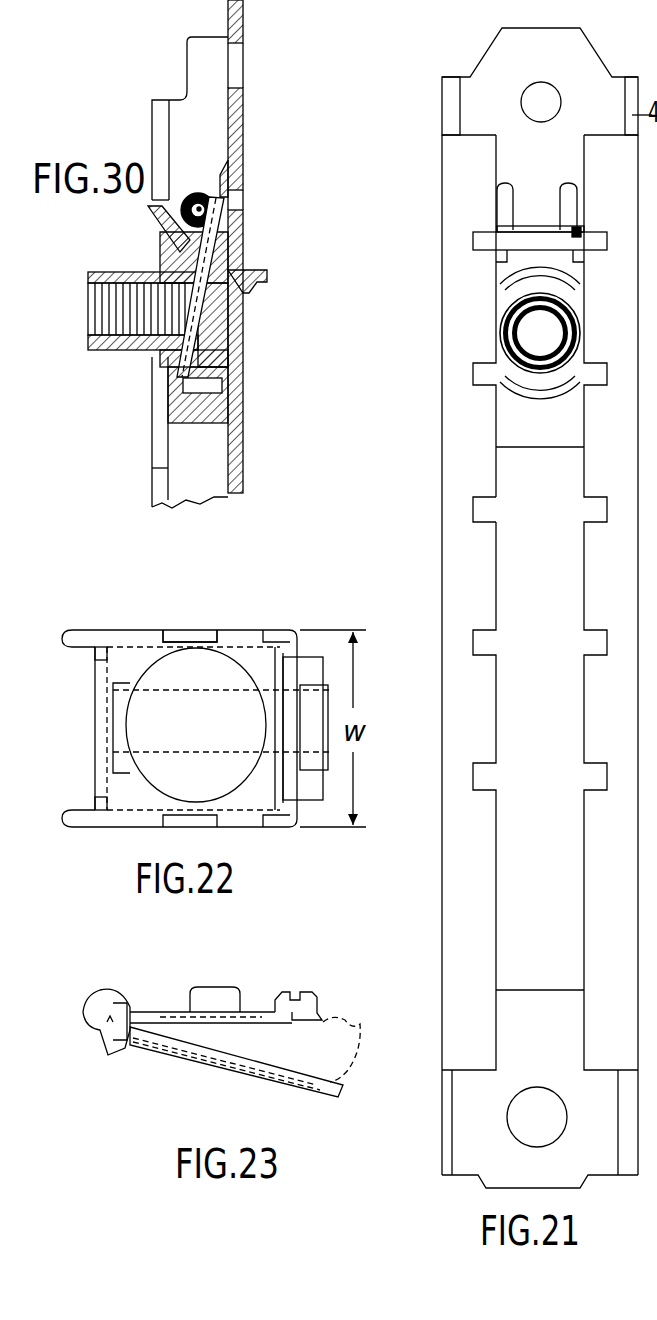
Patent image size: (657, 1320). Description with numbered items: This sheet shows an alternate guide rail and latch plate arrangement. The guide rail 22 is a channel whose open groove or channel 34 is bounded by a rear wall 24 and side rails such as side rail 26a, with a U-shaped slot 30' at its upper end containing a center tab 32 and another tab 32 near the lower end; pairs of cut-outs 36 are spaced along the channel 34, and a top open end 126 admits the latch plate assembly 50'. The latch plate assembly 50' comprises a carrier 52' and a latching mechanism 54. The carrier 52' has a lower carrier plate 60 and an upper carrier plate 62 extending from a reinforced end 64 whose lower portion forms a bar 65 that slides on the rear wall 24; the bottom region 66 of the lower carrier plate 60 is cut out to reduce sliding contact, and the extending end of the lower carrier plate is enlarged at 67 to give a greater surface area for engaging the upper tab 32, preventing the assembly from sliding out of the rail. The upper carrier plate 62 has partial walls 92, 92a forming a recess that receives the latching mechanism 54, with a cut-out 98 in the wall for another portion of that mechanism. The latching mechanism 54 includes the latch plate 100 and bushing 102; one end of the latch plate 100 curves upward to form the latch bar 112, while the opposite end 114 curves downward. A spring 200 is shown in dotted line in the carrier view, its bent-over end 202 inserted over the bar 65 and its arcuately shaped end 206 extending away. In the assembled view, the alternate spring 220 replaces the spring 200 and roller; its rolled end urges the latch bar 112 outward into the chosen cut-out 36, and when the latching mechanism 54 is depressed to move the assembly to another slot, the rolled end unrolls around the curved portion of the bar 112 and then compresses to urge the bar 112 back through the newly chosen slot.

In FIG. 30, the guide rail 22 is at (243, 27).
In FIG. 30, the rear wall 24 is at (236, 130).
In FIG. 21, the rear wall 24 is at (556, 36).
In FIG. 21, the side rail 26a is at (448, 113).
In FIG. 21, the U-shaped slot 30' is at (537, 193).
In FIG. 21, the tab 32 is at (541, 1006).
In FIG. 30, the channel 34 is at (215, 465).
In FIG. 21, the channel 34 is at (553, 605).
In FIG. 30, the cut-out 36 is at (157, 486).
In FIG. 21, the cut-out 36 is at (478, 505).
In FIG. 30, the latch plate assembly 50' is at (124, 329).
In FIG. 22, the carrier 52' is at (213, 702).
In FIG. 23, the carrier 52' is at (216, 984).
In FIG. 30, the latching mechanism 54 is at (128, 352).
In FIG. 23, the lower carrier plate 60 is at (235, 1070).
In FIG. 22, the upper carrier plate 62 is at (256, 782).
In FIG. 22, the reinforced end 64 is at (84, 655).
In FIG. 23, the reinforced end 64 is at (93, 998).
In FIG. 22, the bar 65 is at (100, 728).
In FIG. 23, the bar 65 is at (100, 1034).
In FIG. 22, the bottom region 66 is at (186, 690).
In FIG. 23, the bottom region 66 is at (272, 1023).
In FIG. 22, the enlarged end 67 is at (318, 713).
In FIG. 23, the enlarged end 67 is at (345, 1082).
In FIG. 23, the partial wall 92 is at (216, 997).
In FIG. 22, the partial wall 92a is at (188, 630).
In FIG. 23, the cut-out 98 is at (300, 987).
In FIG. 30, the latch plate 100 is at (176, 238).
In FIG. 21, the latch plate 100 is at (553, 274).
In FIG. 30, the bushing 102 is at (147, 352).
In FIG. 21, the bushing 102 is at (565, 335).
In FIG. 30, the latch bar 112 is at (150, 213).
In FIG. 21, the latch bar 112 is at (586, 240).
In FIG. 30, the downwardly curved end 114 is at (190, 418).
In FIG. 21, the top open end 126 is at (476, 108).
In FIG. 23, the spring 200 is at (270, 1064).
In FIG. 23, the bent-over end 202 is at (136, 1005).
In FIG. 23, the arcuately shaped end 206 is at (350, 1018).
In FIG. 30, the spring 220 is at (195, 178).